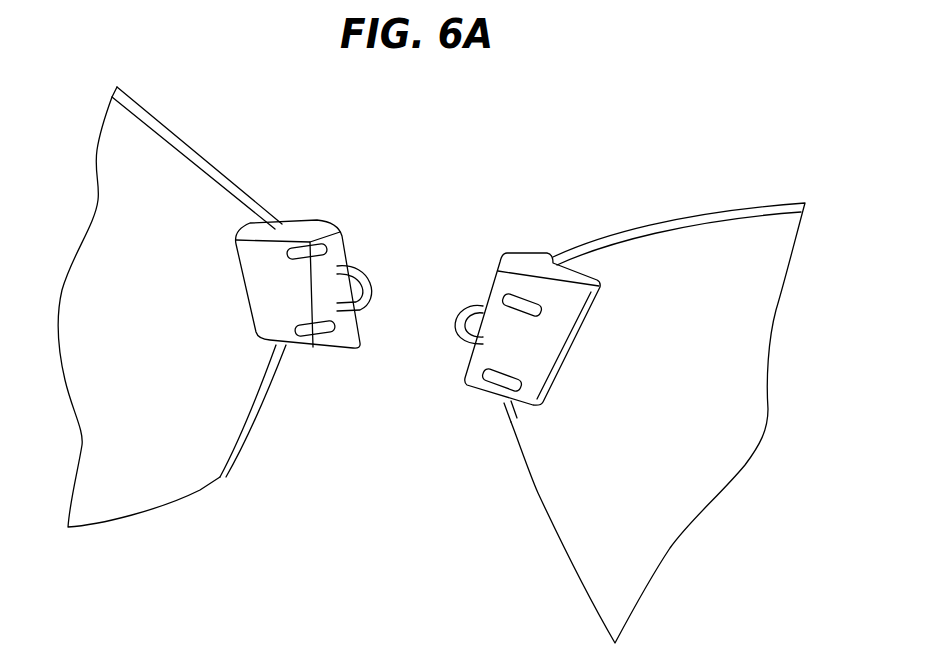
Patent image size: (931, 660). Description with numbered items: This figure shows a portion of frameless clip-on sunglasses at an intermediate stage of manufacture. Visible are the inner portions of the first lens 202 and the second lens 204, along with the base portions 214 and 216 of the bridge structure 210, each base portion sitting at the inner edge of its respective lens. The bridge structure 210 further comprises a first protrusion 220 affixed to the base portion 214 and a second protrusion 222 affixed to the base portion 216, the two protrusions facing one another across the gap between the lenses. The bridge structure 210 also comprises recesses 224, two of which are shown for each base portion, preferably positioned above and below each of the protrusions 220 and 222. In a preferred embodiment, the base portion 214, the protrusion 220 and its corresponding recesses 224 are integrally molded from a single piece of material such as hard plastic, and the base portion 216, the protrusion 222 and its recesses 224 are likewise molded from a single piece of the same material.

The bridge structure 210 is at (453, 166).
The first lens 202 is at (160, 384).
The second lens 204 is at (708, 468).
The base portion 214 is at (314, 222).
The base portion 216 is at (536, 253).
The first protrusion 220 is at (371, 276).
The second protrusion 222 is at (460, 302).
The recesses 224 is at (323, 256).